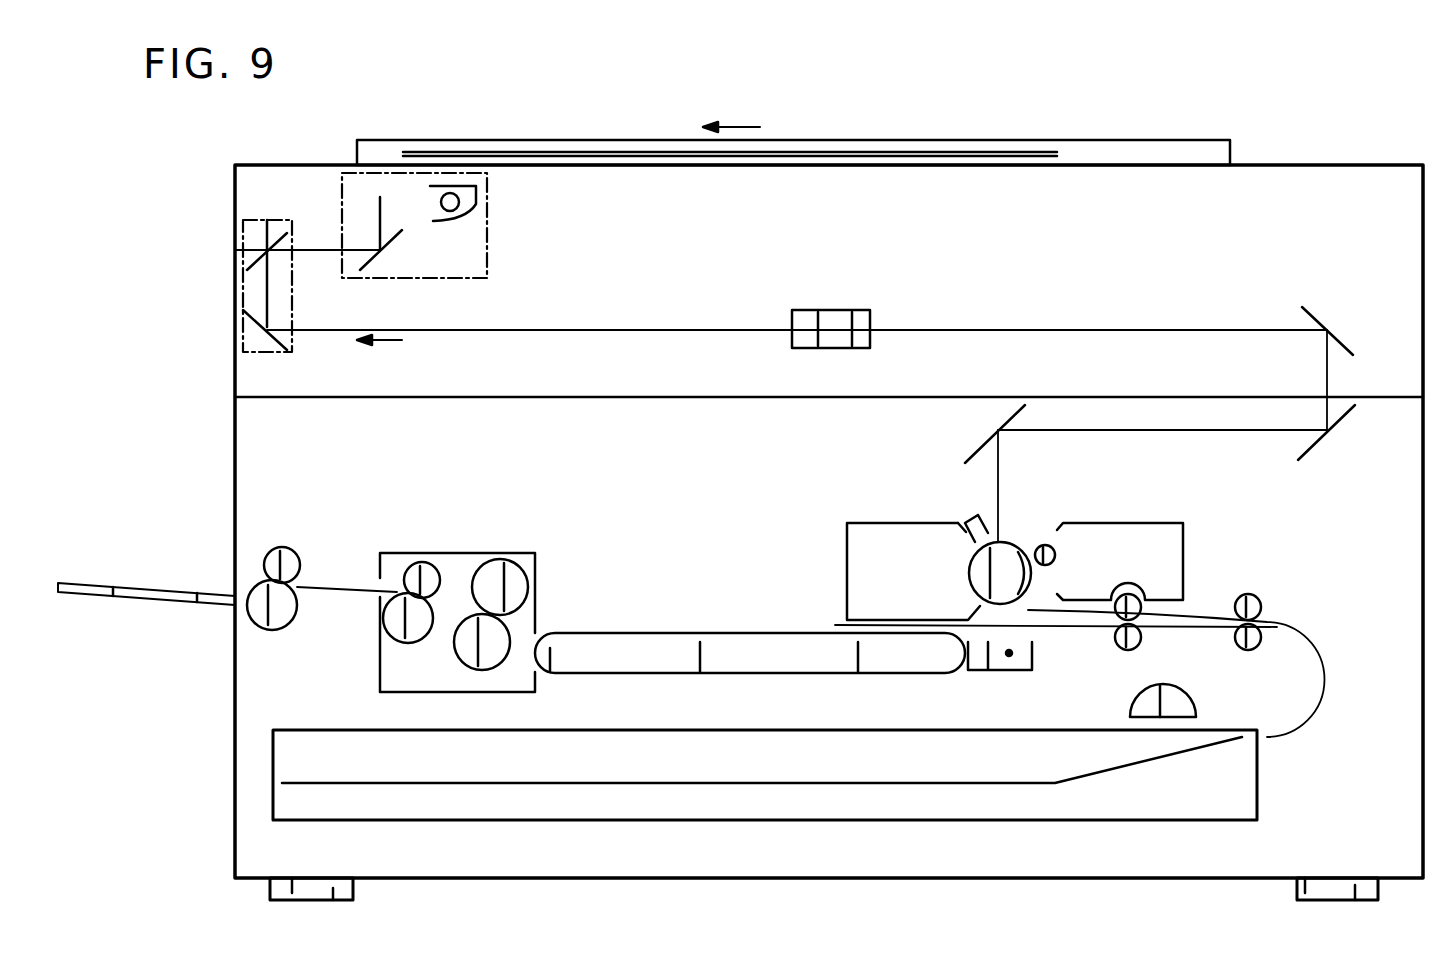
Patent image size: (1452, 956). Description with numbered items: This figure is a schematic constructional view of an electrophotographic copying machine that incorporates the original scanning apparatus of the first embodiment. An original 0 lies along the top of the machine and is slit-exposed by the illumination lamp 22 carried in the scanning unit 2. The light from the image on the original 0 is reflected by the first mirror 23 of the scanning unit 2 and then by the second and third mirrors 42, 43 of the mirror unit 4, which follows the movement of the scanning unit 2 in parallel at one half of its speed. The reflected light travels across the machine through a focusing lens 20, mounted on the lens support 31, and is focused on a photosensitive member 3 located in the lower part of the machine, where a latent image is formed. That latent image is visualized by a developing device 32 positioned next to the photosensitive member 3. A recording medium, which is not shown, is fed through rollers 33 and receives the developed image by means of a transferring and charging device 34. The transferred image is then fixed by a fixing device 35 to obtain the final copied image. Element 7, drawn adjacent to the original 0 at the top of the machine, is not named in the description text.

The original 0 is at (633, 152).
The scanning unit 2 is at (496, 262).
The photosensitive member 3 is at (1010, 542).
The mirror unit 4 is at (253, 220).
The platen glass 7 is at (1180, 160).
The focusing lens 20 is at (852, 312).
The illumination lamp 22 is at (455, 195).
The first mirror 23 is at (397, 230).
The lens support 31 is at (684, 398).
The developing device 32 is at (1145, 545).
The rollers 33 is at (1230, 641).
The transferring and charging device 34 is at (1018, 660).
The fixing device 35 is at (470, 565).
The second mirror 42 is at (262, 254).
The third mirror 43 is at (253, 322).